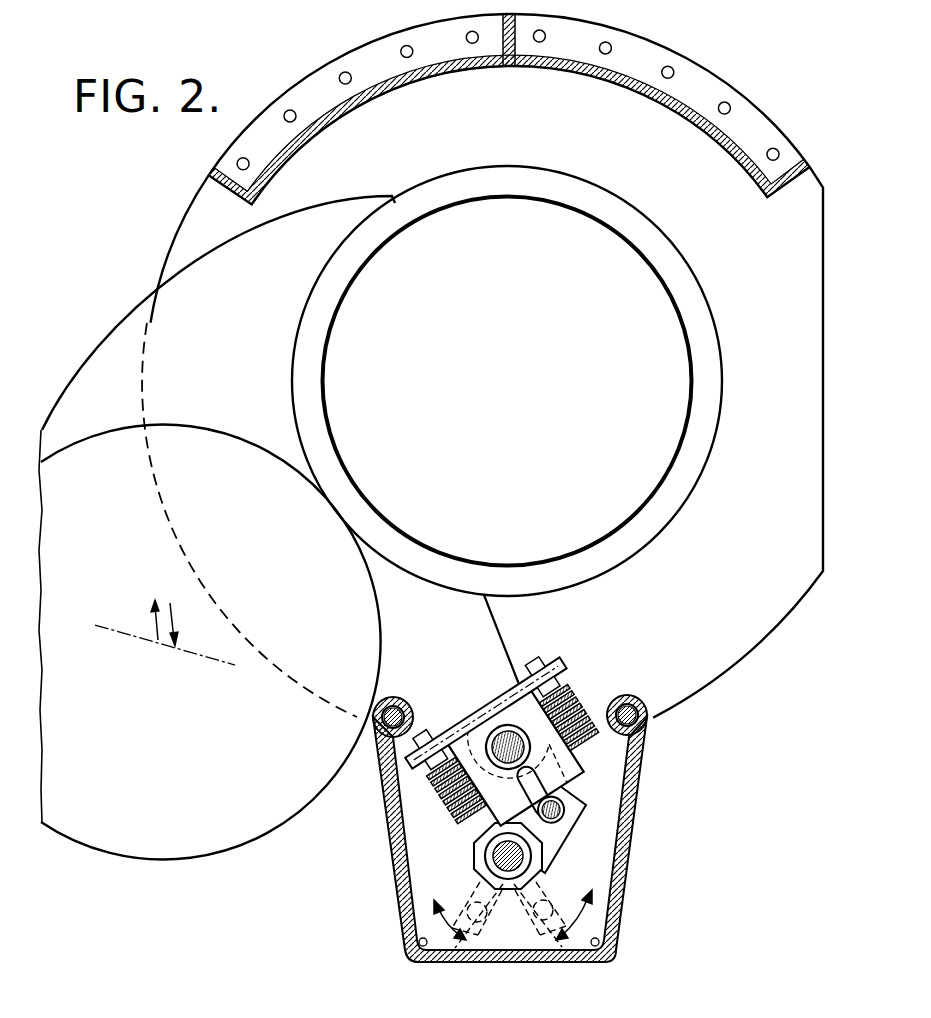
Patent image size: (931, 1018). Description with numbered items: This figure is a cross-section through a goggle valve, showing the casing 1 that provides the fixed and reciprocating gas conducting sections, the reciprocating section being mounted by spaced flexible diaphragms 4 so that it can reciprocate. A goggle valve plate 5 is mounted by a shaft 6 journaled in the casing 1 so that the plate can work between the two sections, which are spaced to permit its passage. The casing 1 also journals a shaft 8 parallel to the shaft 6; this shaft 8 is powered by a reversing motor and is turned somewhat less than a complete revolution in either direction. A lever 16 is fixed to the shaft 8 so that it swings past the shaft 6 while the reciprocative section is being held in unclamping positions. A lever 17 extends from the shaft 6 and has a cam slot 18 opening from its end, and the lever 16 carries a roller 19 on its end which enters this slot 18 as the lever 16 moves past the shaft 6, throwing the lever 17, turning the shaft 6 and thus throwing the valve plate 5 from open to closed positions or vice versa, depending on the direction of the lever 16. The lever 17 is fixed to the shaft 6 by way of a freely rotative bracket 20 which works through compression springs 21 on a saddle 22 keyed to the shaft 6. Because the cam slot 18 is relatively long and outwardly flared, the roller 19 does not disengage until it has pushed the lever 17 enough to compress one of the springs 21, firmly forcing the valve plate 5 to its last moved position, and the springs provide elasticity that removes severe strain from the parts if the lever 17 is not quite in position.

The casing 1 is at (673, 106).
The diaphragms 4 is at (708, 164).
The goggle valve plate 5 is at (303, 352).
The shaft 6 is at (505, 738).
The shaft 8 is at (490, 853).
The lever 16 is at (553, 833).
The lever 17 is at (560, 767).
The cam slot 18 is at (553, 783).
The roller 19 is at (566, 808).
The freely rotative bracket 20 is at (514, 702).
The compression springs 21 is at (577, 685).
The saddle 22 is at (614, 712).